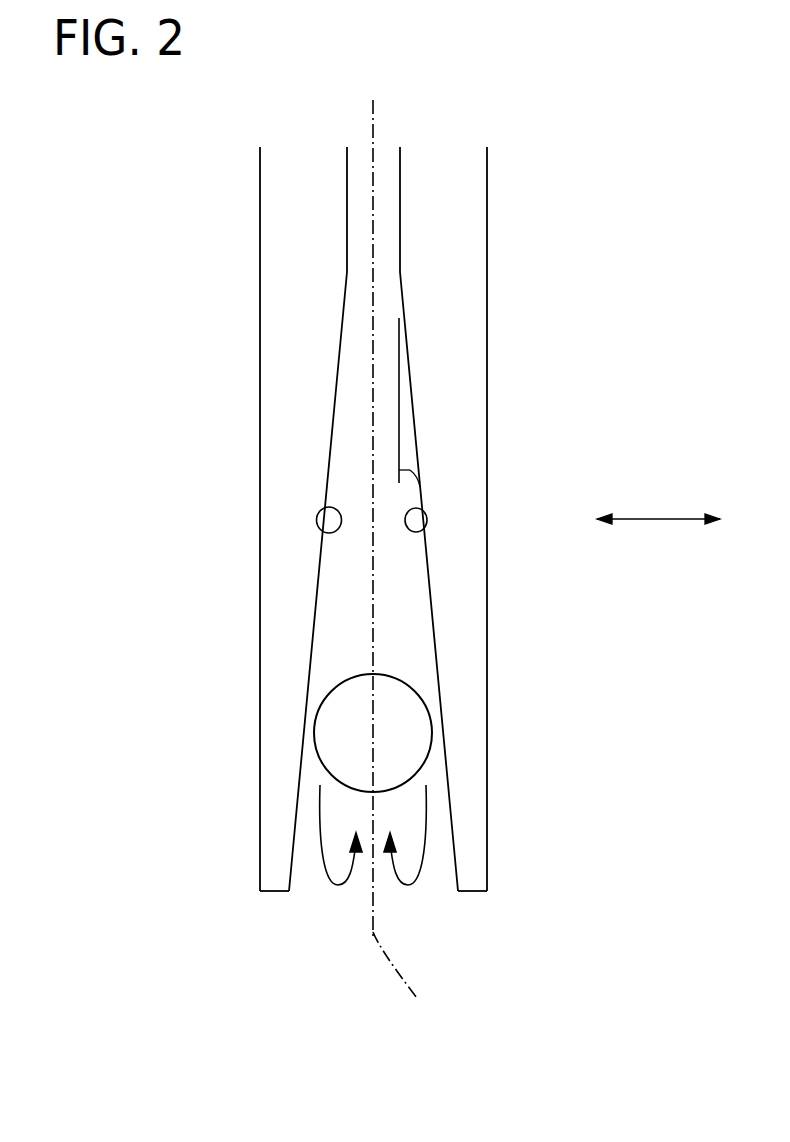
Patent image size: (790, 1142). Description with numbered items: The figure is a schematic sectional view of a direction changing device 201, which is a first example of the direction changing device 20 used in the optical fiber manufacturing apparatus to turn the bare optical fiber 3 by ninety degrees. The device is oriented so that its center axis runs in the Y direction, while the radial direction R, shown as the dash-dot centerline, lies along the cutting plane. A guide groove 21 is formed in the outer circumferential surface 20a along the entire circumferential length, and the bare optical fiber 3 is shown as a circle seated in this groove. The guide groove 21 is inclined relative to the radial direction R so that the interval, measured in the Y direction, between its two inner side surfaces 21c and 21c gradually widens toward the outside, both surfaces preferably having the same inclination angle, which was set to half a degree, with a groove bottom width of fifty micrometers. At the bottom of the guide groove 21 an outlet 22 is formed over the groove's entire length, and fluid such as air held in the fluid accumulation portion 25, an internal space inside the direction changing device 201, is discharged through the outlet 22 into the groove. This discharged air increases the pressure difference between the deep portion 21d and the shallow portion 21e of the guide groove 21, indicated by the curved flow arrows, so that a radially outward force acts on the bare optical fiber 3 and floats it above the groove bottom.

The direction changing device 201 is at (487, 207).
The direction changing device 20 is at (423, 569).
The outer circumferential surface 20a is at (273, 891).
The guide groove 21 is at (372, 579).
The inner side surface 21c is at (318, 530).
The deep portion 21d is at (355, 393).
The shallow portion 21e is at (357, 812).
The outlet 22 is at (386, 268).
The fluid accumulation portion 25 is at (387, 207).
The bare optical fiber 3 is at (432, 733).
The Y direction Y is at (658, 505).
The radial direction R is at (399, 983).